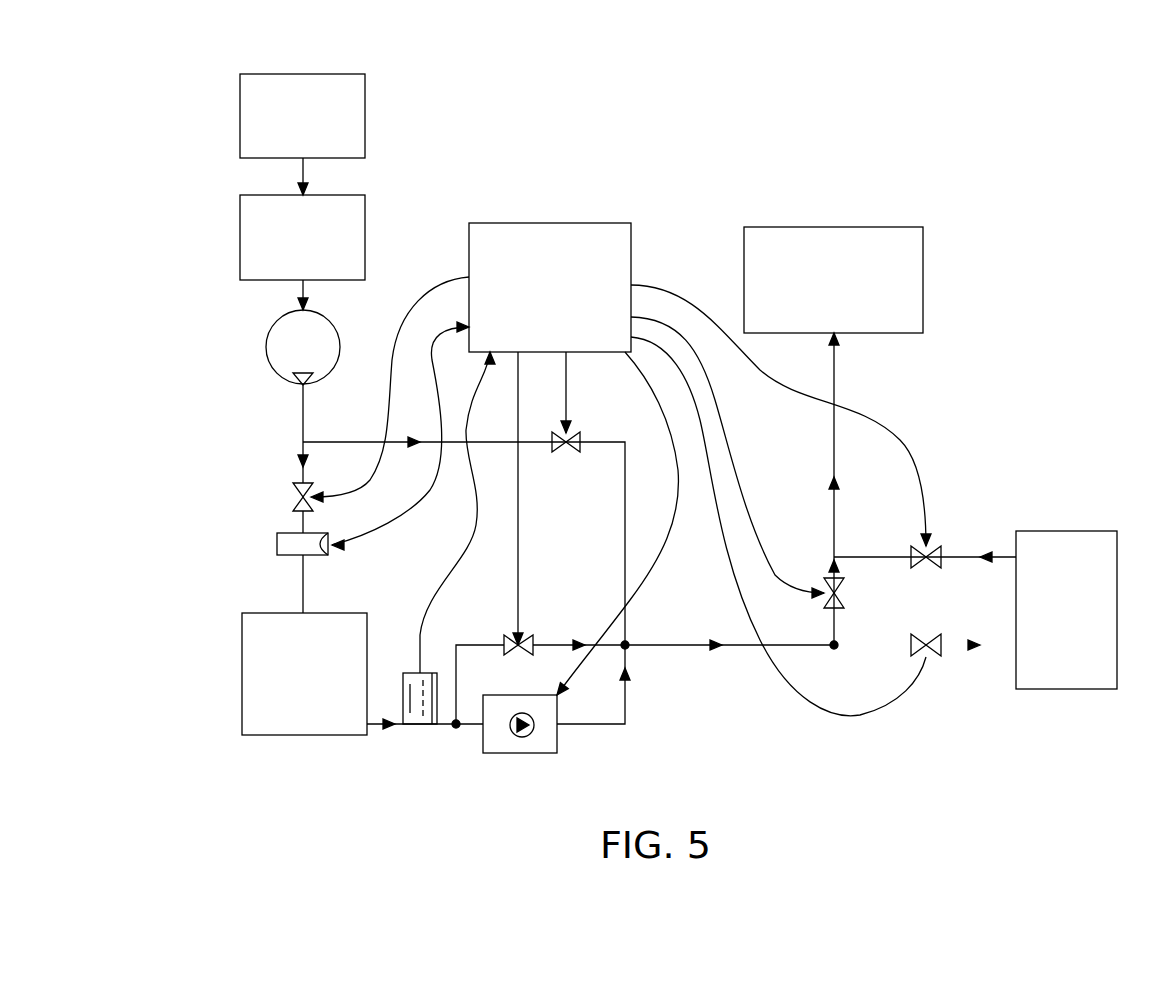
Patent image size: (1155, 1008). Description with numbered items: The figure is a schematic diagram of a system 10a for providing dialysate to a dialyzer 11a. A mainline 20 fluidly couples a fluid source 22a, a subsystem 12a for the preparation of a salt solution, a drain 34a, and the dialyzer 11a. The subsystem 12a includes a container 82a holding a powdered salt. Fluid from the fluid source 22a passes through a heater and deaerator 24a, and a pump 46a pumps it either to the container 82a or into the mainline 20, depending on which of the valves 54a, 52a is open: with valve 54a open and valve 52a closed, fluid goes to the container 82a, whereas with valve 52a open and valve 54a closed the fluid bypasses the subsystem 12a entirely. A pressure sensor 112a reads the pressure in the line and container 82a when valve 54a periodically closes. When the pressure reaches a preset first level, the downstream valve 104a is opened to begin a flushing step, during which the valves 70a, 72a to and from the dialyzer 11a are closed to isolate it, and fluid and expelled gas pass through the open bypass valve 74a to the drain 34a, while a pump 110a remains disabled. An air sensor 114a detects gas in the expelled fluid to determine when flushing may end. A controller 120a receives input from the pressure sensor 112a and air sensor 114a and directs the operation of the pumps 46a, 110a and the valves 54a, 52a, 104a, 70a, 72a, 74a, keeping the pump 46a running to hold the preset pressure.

The system 10a is at (690, 130).
The dialyzer 11a is at (1050, 617).
The subsystem 12a is at (402, 760).
The mainline 20 is at (303, 183).
The fluid source 22a is at (284, 123).
The heater and deaerator 24a is at (284, 245).
The drain 34a is at (814, 287).
The pump 46a is at (284, 357).
The valve 52a is at (574, 434).
The valve 54a is at (296, 490).
The valve 70a is at (943, 640).
The valve 72a is at (941, 550).
The bypass valve 74a is at (828, 604).
The container 82a is at (286, 680).
The valve 104a is at (530, 637).
The pump 110a is at (557, 738).
The pressure sensor 112a is at (277, 545).
The air sensor 114a is at (405, 673).
The controller 120a is at (526, 293).